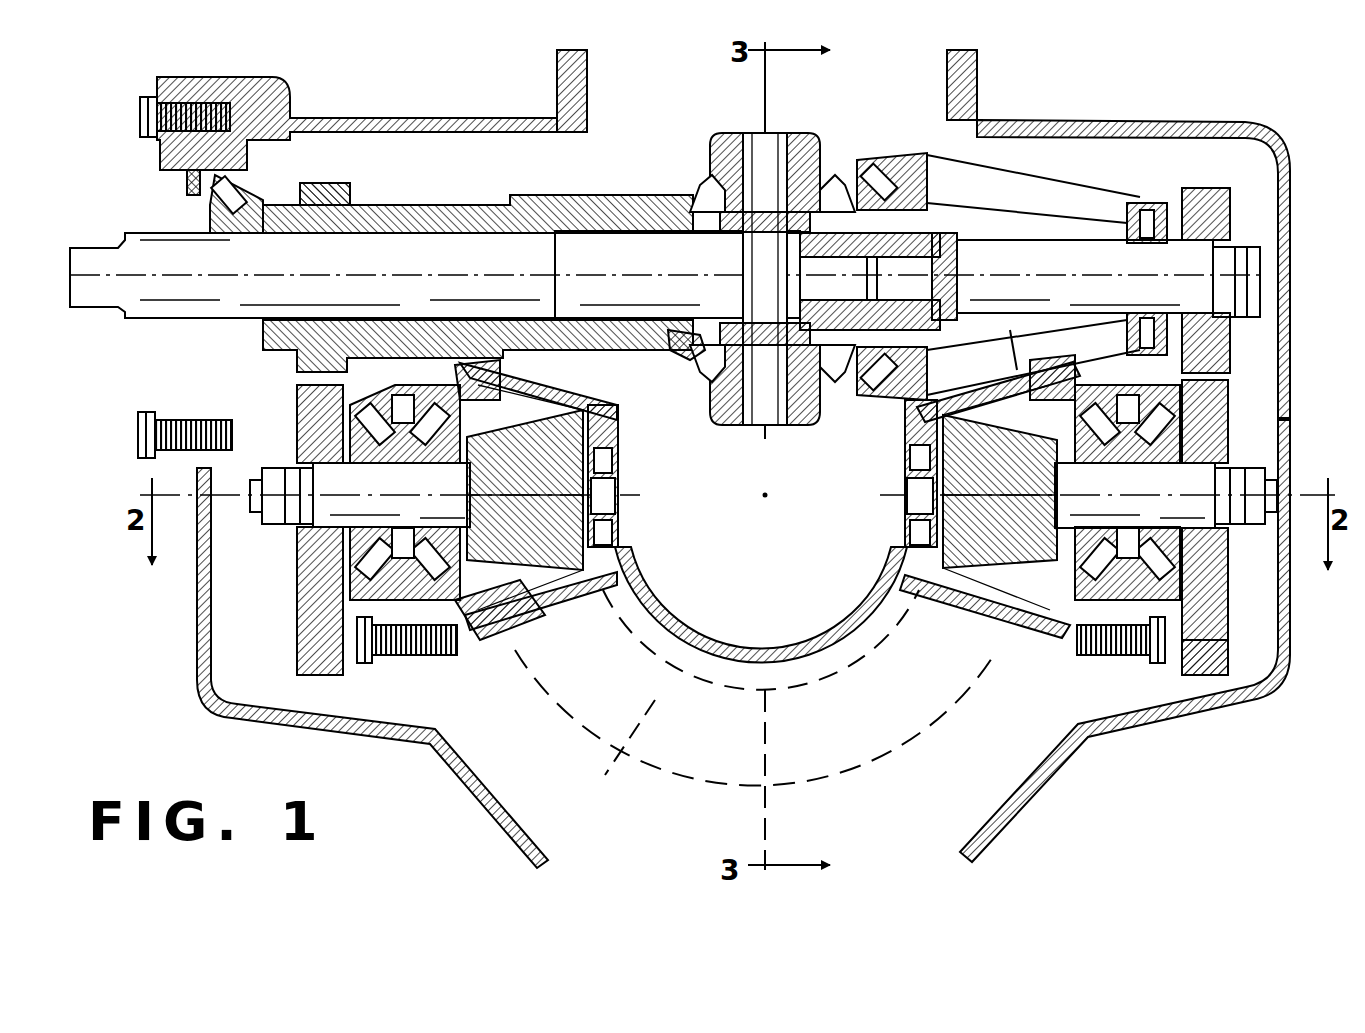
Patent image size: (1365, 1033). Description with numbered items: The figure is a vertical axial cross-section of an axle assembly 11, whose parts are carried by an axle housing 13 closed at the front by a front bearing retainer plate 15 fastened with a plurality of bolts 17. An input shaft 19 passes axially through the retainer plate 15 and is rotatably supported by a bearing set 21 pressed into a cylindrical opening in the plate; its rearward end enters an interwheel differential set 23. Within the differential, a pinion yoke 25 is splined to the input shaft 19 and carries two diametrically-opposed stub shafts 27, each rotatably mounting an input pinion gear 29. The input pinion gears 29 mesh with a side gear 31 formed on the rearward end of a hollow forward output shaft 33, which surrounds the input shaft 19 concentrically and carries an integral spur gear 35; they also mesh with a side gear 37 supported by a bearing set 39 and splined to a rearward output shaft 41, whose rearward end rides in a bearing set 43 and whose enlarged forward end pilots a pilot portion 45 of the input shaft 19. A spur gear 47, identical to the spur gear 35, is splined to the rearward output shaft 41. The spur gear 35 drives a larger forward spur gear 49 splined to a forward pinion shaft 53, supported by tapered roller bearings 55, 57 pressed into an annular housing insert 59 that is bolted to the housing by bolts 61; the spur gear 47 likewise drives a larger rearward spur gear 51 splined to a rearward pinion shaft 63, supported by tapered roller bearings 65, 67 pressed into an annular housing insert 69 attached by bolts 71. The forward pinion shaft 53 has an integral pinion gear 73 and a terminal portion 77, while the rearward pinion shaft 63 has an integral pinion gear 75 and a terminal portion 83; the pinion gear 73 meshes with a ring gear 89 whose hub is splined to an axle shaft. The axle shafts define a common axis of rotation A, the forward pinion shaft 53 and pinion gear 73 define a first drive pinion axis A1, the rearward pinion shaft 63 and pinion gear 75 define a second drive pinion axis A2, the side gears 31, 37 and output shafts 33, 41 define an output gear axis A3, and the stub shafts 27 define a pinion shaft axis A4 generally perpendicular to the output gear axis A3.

The axle assembly 11 is at (468, 100).
The axle housing 13 is at (197, 610).
The front bearing retainer plate 15 is at (195, 185).
The bolts 17 is at (137, 125).
The input shaft 19 is at (162, 298).
The bearing set 21 is at (245, 190).
The interwheel differential set 23 is at (695, 160).
The pinion yoke 25 is at (744, 236).
The stub shafts 27 is at (774, 142).
The input pinion gear 29 is at (820, 177).
The side gear 31 is at (690, 353).
The forward output shaft 33 is at (472, 205).
The spur gear 35 is at (326, 198).
The side gear 37 is at (870, 402).
The bearing set 39 is at (887, 178).
The rearward output shaft 41 is at (1032, 264).
The bearing set 43 is at (1152, 205).
The pilot portion 45 is at (858, 247).
The spur gear 47 is at (1202, 213).
The forward spur gear 49 is at (318, 643).
The rearward spur gear 51 is at (1185, 664).
The forward pinion shaft 53 is at (360, 495).
The tapered roller bearing 55 is at (395, 552).
The tapered roller bearing 57 is at (497, 616).
The annular housing insert 59 is at (360, 597).
The bolts 61 is at (362, 656).
The rearward pinion shaft 63 is at (1166, 495).
The tapered roller bearing 65 is at (1205, 527).
The tapered roller bearing 67 is at (1060, 600).
The annular housing insert 69 is at (1170, 416).
The bolts 71 is at (1097, 656).
The pinion gear 73 is at (560, 574).
The pinion gear 75 is at (977, 556).
The terminal portion 77 is at (618, 510).
The terminal portion 83 is at (905, 511).
The ring gear 89 is at (756, 727).
The common axis of rotation A is at (766, 496).
The first drive pinion axis A1 is at (540, 497).
The second drive pinion axis A2 is at (1015, 497).
The output gear axis A3 is at (638, 282).
The pinion shaft axis A4 is at (764, 320).